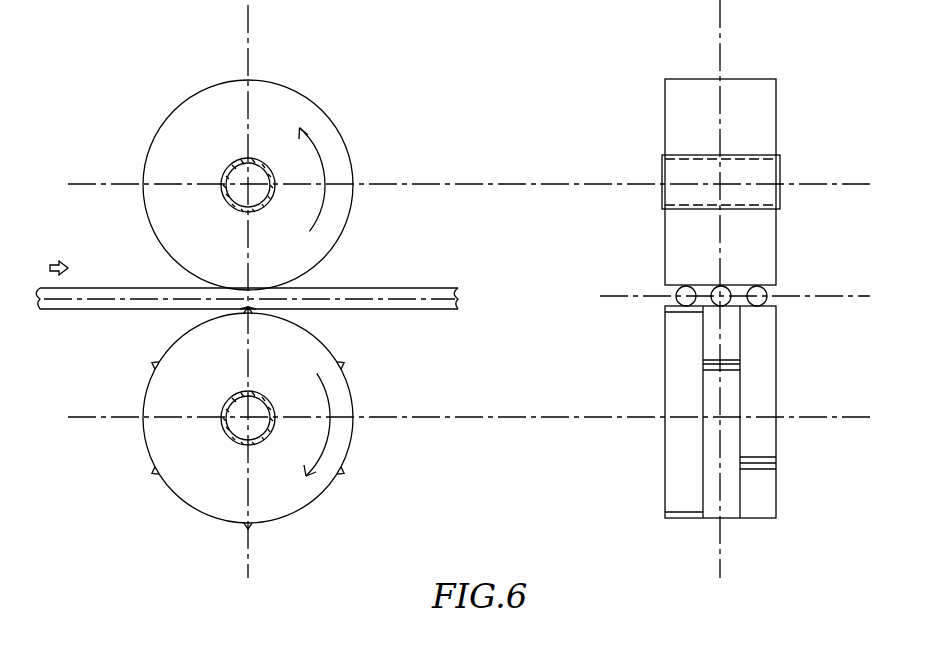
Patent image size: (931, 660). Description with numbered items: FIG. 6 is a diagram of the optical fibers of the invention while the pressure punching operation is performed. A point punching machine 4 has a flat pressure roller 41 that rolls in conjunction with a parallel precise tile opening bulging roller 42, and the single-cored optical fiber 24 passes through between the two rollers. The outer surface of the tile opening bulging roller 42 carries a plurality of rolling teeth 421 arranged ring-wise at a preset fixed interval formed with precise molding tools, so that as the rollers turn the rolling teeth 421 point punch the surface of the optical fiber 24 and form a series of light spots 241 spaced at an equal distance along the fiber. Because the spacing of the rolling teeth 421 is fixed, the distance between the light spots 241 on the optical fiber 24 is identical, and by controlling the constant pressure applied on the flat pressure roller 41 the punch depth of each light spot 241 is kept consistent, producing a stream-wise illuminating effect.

The point punching machine 4 is at (167, 90).
The flat pressure roller 41 is at (221, 90).
The tile opening bulging roller 42 is at (200, 497).
The rolling teeth 421 is at (151, 464).
The single-cored optical fiber 24 is at (426, 288).
The light spot 241 is at (250, 308).